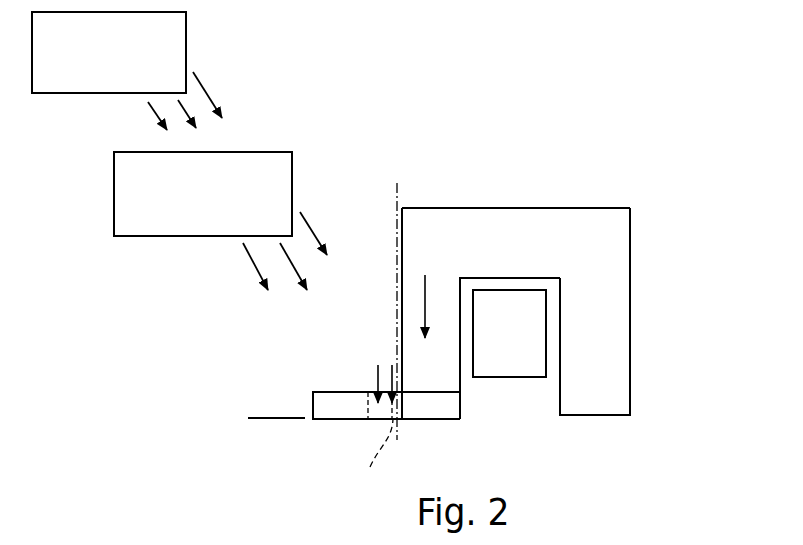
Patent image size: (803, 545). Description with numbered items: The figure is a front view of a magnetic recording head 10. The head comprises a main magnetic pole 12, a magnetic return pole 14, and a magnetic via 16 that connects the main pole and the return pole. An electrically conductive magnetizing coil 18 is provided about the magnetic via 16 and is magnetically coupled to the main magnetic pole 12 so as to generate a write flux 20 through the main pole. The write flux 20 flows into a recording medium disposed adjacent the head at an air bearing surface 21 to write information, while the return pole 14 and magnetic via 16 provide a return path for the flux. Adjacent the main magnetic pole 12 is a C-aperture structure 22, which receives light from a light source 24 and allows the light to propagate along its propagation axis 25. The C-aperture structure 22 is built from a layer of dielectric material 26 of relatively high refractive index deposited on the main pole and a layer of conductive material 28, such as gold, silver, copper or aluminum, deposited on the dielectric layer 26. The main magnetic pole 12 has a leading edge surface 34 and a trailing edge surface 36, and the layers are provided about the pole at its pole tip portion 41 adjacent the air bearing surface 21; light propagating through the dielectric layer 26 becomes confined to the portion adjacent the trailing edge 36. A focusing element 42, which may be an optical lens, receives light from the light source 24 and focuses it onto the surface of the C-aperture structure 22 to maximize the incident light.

The magnetic recording head 10 is at (662, 238).
The main magnetic pole 12 is at (398, 332).
The magnetic return pole 14 is at (612, 372).
The magnetic via 16 is at (516, 289).
The electrically conductive magnetizing coil 18 is at (522, 345).
The write flux 20 is at (425, 275).
The air bearing surface 21 is at (257, 417).
The C-aperture structure 22 is at (316, 380).
The light source 24 is at (88, 93).
The propagation axis 25 is at (395, 183).
The layer of dielectric material 26 is at (375, 434).
The layer of conductive material 28 is at (328, 419).
The leading edge surface 34 is at (463, 388).
The trailing edge surface 36 is at (400, 318).
The pole tip portion 41 is at (466, 419).
The focusing element 42 is at (247, 152).